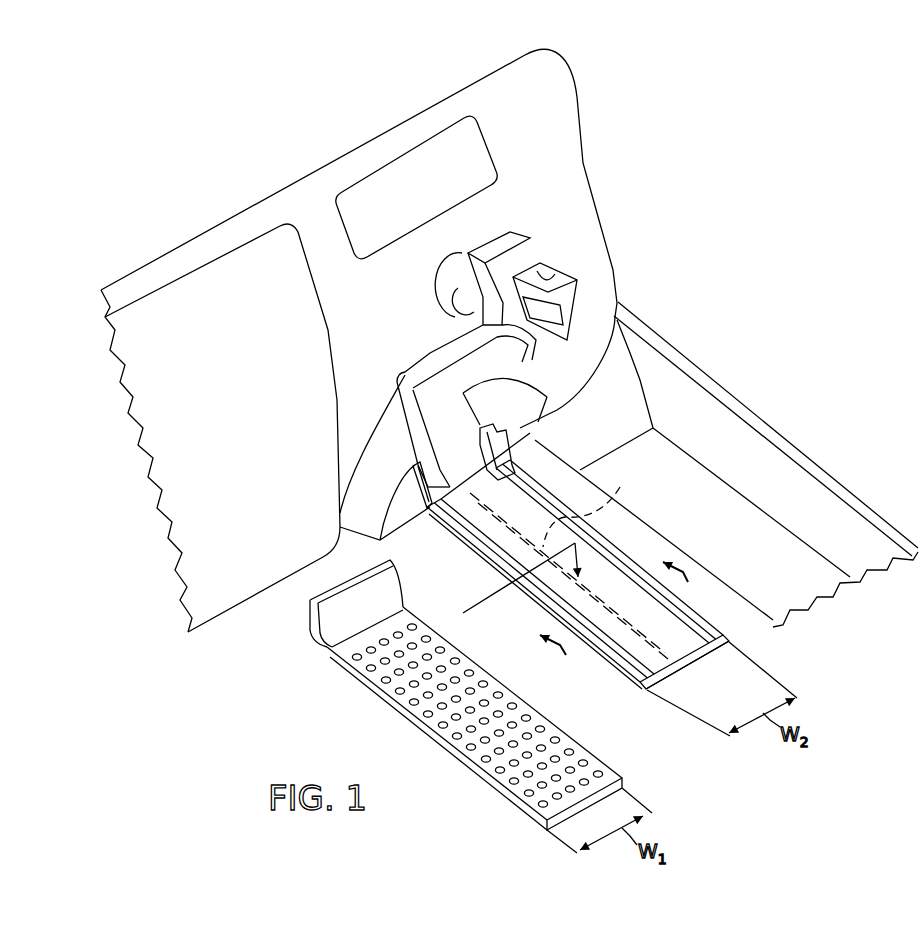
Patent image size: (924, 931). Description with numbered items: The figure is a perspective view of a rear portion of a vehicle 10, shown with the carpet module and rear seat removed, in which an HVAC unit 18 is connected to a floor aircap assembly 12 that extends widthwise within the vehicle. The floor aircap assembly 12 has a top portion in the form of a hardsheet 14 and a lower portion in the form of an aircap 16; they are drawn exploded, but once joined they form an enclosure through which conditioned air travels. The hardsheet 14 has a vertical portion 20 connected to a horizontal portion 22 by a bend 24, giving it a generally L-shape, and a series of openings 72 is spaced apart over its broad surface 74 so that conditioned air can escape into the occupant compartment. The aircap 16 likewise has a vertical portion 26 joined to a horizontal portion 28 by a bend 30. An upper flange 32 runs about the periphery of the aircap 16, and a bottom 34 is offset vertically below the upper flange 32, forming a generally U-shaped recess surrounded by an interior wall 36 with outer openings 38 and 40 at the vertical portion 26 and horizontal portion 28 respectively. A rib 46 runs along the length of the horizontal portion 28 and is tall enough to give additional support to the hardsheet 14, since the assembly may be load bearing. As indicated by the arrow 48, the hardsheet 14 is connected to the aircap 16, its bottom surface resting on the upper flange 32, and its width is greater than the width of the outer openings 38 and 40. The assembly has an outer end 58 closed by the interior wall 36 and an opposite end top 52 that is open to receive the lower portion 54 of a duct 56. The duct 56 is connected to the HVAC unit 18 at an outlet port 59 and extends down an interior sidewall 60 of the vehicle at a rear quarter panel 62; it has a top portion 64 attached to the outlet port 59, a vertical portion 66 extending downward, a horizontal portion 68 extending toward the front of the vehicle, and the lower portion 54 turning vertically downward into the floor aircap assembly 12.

The vehicle 10 is at (747, 265).
The floor aircap assembly 12 is at (305, 545).
The hardsheet 14 is at (378, 678).
The aircap 16 is at (723, 635).
The HVAC unit 18 is at (557, 277).
The vertical portion 20 is at (328, 632).
The horizontal portion 22 is at (520, 793).
The bend 24 is at (388, 615).
The vertical portion 26 is at (418, 463).
The horizontal portion 28 is at (680, 613).
The bend 30 is at (513, 473).
The upper flange 32 is at (627, 533).
The bottom 34 is at (640, 682).
The interior wall 36 is at (717, 633).
The outer opening 38 is at (450, 493).
The outer opening 40 is at (497, 533).
The rib 46 is at (612, 497).
The arrow 48 is at (490, 600).
The end top 52 is at (502, 447).
The lower portion 54 is at (418, 390).
The duct 56 is at (418, 363).
The outer end 58 is at (692, 663).
The outlet port 59 is at (550, 272).
The interior sidewall 60 is at (600, 287).
The rear quarter panel 62 is at (547, 187).
The top portion 64 is at (502, 238).
The vertical portion 66 is at (510, 300).
The horizontal portion 68 is at (507, 353).
The openings 72 is at (483, 758).
The broad surface 74 is at (453, 728).